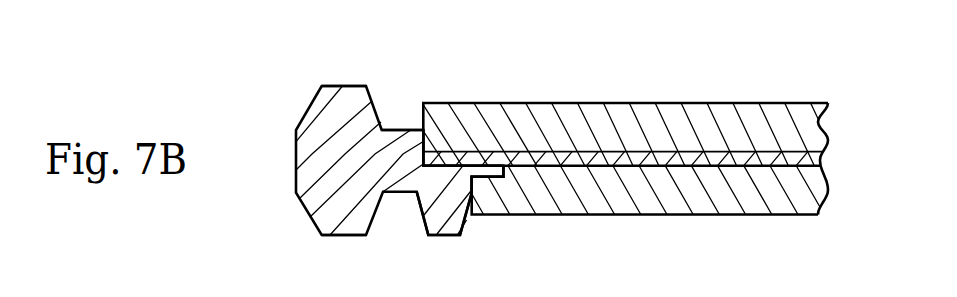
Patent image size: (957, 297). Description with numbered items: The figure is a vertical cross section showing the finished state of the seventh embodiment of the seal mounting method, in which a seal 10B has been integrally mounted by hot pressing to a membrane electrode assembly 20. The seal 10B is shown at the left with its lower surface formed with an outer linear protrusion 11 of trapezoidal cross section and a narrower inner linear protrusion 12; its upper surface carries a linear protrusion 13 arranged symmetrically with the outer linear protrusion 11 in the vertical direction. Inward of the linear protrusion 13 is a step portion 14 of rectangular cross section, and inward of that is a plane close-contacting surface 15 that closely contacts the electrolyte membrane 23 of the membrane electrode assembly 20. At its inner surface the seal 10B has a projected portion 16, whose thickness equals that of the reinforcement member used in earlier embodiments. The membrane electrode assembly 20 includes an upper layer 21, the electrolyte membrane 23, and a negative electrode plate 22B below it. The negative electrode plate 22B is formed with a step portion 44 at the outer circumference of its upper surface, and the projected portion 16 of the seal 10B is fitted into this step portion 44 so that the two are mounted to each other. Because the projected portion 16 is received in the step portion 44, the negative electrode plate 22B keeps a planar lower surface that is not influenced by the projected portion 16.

The seal 10B is at (395, 154).
The outer linear protrusion 11 is at (343, 236).
The inner linear protrusion 12 is at (443, 236).
The linear protrusion 13 is at (340, 86).
The step portion 14 is at (405, 130).
The close-contacting surface 15 is at (448, 160).
The projected portion 16 is at (517, 166).
The membrane electrode assembly 20 is at (625, 150).
The upper layer 21 is at (645, 103).
The negative electrode plate 22B is at (612, 215).
The electrolyte membrane 23 is at (712, 152).
The step portion 44 is at (502, 177).